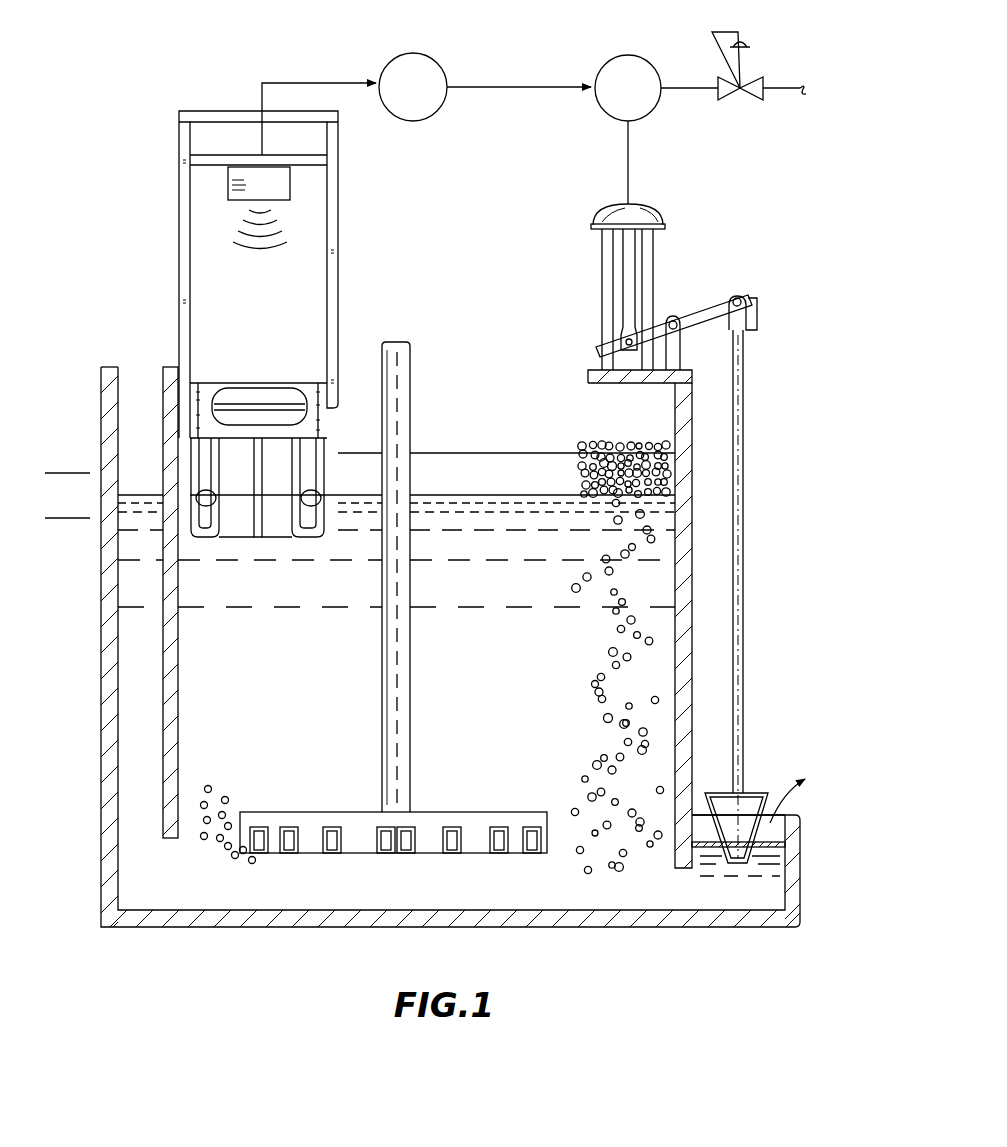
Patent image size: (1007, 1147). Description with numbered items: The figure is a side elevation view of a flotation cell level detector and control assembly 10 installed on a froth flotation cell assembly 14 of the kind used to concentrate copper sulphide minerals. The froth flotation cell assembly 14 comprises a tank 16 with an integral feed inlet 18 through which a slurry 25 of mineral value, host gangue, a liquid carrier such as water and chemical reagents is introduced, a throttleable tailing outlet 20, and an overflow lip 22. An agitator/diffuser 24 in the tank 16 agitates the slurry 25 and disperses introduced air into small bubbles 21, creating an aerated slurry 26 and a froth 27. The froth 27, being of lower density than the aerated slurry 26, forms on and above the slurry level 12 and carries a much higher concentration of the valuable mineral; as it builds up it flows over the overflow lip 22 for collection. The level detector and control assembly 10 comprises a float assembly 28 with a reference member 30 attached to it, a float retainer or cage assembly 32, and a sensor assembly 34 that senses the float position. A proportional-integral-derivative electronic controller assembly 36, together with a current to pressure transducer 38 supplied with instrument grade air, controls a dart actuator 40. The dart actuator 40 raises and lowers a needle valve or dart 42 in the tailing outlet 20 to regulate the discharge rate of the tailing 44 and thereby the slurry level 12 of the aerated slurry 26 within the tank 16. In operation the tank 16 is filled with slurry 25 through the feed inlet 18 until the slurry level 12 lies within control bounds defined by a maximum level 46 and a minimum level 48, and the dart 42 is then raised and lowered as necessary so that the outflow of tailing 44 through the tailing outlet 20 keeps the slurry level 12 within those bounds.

The flotation cell level detector and control assembly 10 is at (213, 70).
The slurry level 12 is at (508, 495).
The froth flotation cell assembly 14 is at (182, 931).
The tank 16 is at (493, 928).
The feed inlet 18 is at (102, 390).
The tailing outlet 20 is at (800, 846).
The bubbles 21 is at (574, 611).
The overflow lip 22 is at (445, 453).
The agitator/diffuser 24 is at (455, 812).
The slurry 25 is at (140, 393).
The aerated slurry 26 is at (424, 661).
The froth 27 is at (625, 438).
The float assembly 28 is at (243, 506).
The reference member 30 is at (252, 392).
The float retainer or cage assembly 32 is at (344, 298).
The sensor assembly 34 is at (298, 186).
The proportional-integral-derivative (PID) electronic controller assembly 36 is at (439, 63).
The current to pressure (IP) transducer 38 is at (651, 65).
The dart actuator 40 is at (650, 211).
The needle valve or dart 42 is at (758, 798).
The tailing 44 is at (783, 803).
The maximum level 46 is at (64, 473).
The minimum level 48 is at (64, 518).